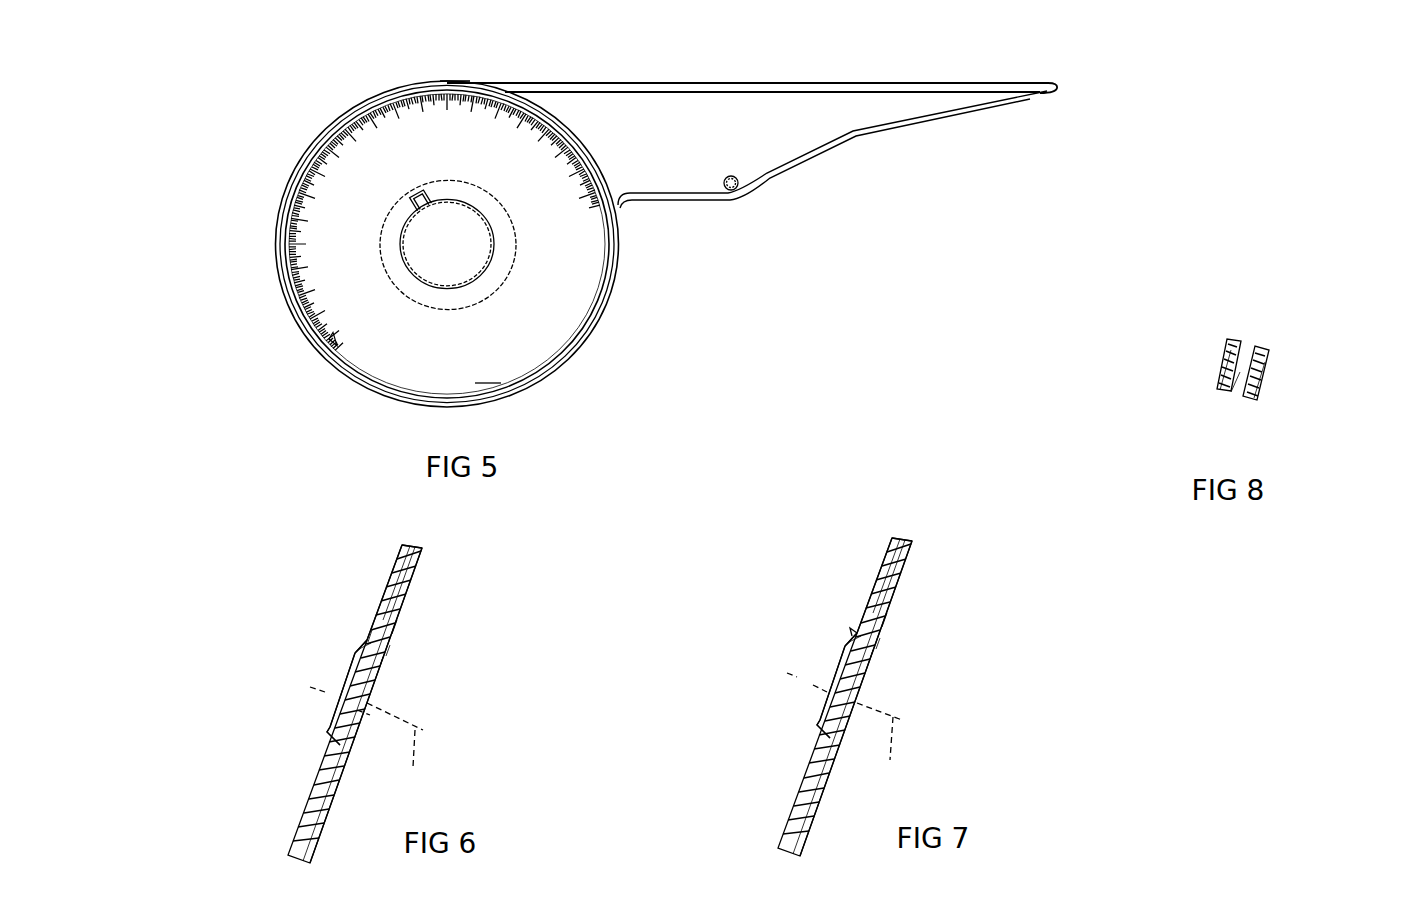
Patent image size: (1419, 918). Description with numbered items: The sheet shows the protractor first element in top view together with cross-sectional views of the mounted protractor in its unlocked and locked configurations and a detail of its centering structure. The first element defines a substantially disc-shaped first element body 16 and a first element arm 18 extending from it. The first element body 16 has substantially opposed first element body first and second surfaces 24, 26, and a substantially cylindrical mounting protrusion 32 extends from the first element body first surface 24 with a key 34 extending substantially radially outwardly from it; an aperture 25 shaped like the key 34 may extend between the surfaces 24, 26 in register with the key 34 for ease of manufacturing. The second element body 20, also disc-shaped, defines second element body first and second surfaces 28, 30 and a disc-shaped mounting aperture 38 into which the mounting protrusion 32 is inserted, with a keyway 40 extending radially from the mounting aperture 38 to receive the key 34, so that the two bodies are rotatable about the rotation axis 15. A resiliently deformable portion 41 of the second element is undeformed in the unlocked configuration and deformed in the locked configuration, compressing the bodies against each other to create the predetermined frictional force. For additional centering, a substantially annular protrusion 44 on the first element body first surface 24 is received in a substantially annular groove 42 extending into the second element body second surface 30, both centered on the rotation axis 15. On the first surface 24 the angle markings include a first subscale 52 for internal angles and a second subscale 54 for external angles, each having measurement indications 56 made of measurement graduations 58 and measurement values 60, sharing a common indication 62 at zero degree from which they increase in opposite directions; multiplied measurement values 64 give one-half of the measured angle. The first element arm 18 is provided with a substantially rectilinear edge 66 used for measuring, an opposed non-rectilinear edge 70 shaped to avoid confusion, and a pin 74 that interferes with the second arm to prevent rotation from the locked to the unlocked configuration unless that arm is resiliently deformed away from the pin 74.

In FIG. 6, the rotation axis 15 is at (367, 740).
In FIG. 7, the rotation axis 15 is at (844, 729).
In FIG. 5, the first element body 16 is at (477, 245).
In FIG. 8, the first element body 16 is at (1273, 394).
In FIG. 6, the first element body 16 is at (414, 595).
In FIG. 7, the first element body 16 is at (904, 591).
In FIG. 5, the first element arm 18 is at (752, 141).
In FIG. 8, the second element body 20 is at (1226, 375).
In FIG. 6, the second element body 20 is at (332, 704).
In FIG. 7, the second element body 20 is at (832, 697).
In FIG. 5, the first element body first surface 24 is at (488, 370).
In FIG. 8, the first element body first surface 24 is at (1228, 377).
In FIG. 6, the first element body first surface 24 is at (383, 612).
In FIG. 7, the first element body first surface 24 is at (873, 607).
In FIG. 6, the aperture 25 is at (383, 657).
In FIG. 7, the aperture 25 is at (872, 655).
In FIG. 6, the first element body second surface 26 is at (397, 620).
In FIG. 7, the first element body second surface 26 is at (890, 615).
In FIG. 6, the second element body first surface 28 is at (384, 594).
In FIG. 7, the second element body first surface 28 is at (880, 593).
In FIG. 8, the second element body second surface 30 is at (1236, 395).
In FIG. 6, the second element body second surface 30 is at (390, 645).
In FIG. 7, the second element body second surface 30 is at (880, 637).
In FIG. 5, the mounting protrusion 32 is at (452, 240).
In FIG. 6, the mounting protrusion 32 is at (342, 688).
In FIG. 7, the mounting protrusion 32 is at (822, 702).
In FIG. 5, the key 34 is at (442, 221).
In FIG. 6, the key 34 is at (370, 645).
In FIG. 7, the key 34 is at (857, 640).
In FIG. 6, the mounting aperture 38 is at (340, 743).
In FIG. 7, the mounting aperture 38 is at (825, 737).
In FIG. 6, the keyway 40 is at (377, 638).
In FIG. 6, the resiliently deformable portion 41 is at (378, 605).
In FIG. 7, the resiliently deformable portion 41 is at (875, 600).
In FIG. 8, the substantially annular groove 42 is at (1250, 348).
In FIG. 8, the substantially annular protrusion 44 is at (1262, 358).
In FIG. 5, the first subscale 52 is at (447, 244).
In FIG. 5, the second subscale 54 is at (477, 77).
In FIG. 5, the measurement indications 56 is at (333, 338).
In FIG. 5, the measurement graduations 58 is at (329, 233).
In FIG. 5, the measurement values 60 is at (484, 151).
In FIG. 5, the common indication 62 is at (444, 222).
In FIG. 5, the multiplied measurement values 64 is at (353, 212).
In FIG. 5, the substantially rectilinear edge 66 is at (830, 83).
In FIG. 5, the non-rectilinear edge 70 is at (858, 142).
In FIG. 5, the pin 74 is at (733, 187).